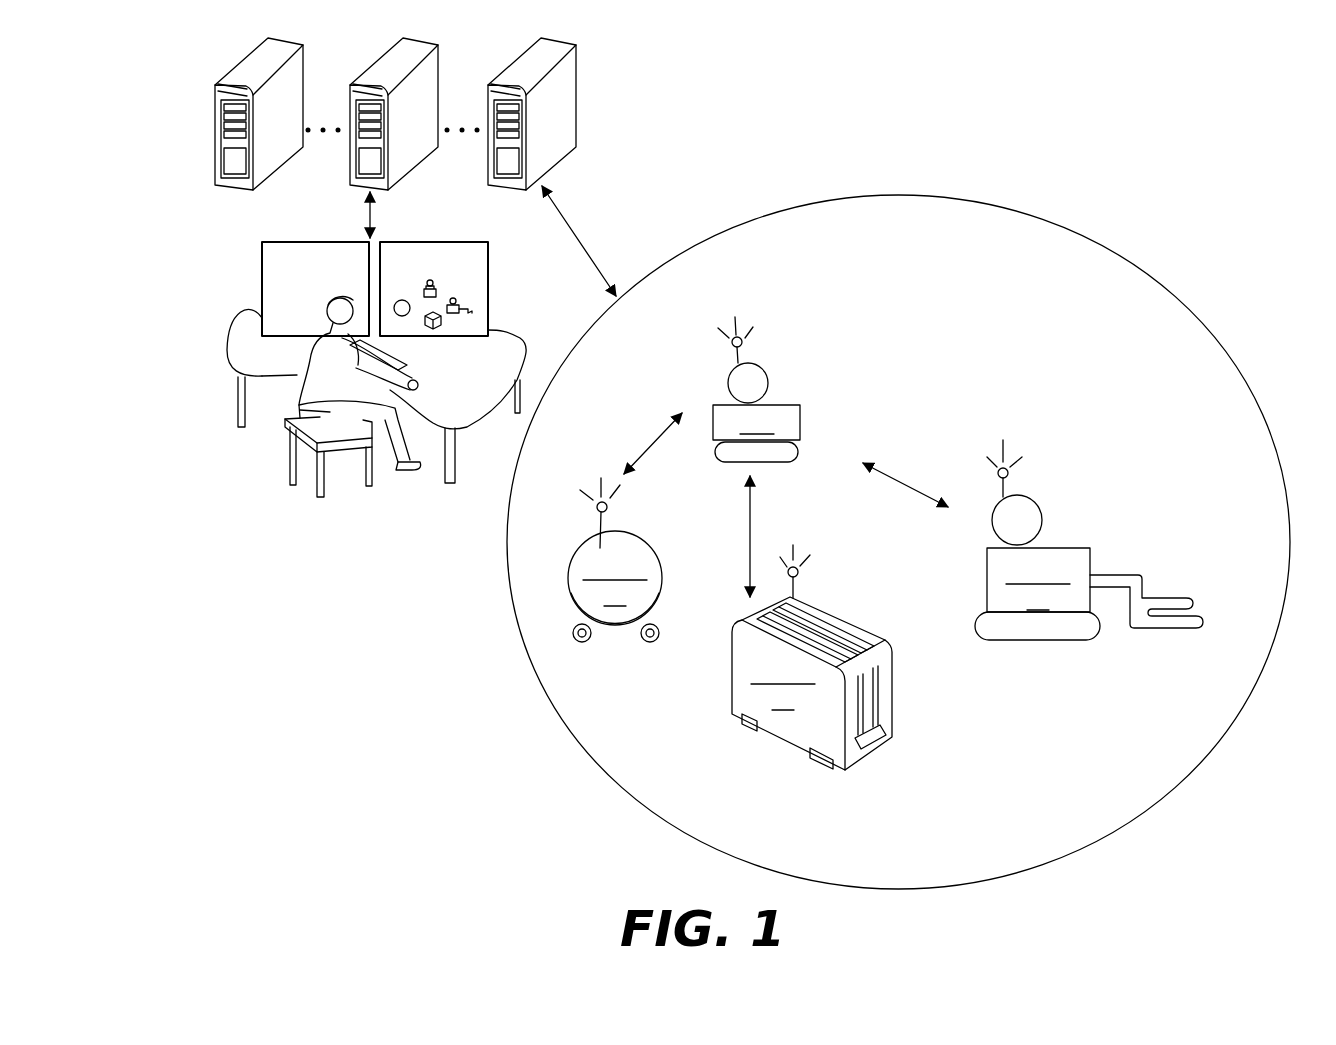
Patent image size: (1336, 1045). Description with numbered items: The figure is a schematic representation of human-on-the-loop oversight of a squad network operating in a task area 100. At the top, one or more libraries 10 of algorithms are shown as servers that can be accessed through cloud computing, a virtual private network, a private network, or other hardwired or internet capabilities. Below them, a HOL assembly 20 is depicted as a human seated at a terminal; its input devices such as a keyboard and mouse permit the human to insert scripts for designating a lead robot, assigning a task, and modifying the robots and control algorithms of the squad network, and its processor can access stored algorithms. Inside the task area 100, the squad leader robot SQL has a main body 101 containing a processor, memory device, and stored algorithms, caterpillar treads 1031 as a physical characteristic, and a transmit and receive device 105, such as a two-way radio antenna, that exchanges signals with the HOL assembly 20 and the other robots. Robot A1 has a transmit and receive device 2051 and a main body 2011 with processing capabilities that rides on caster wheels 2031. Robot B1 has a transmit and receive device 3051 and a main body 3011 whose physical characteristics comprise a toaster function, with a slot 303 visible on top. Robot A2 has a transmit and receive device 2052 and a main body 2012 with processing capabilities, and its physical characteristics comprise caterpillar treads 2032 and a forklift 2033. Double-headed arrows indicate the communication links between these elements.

The library of algorithms 10 is at (260, 62).
The HOL assembly 20 is at (246, 245).
The task area 100 is at (1170, 288).
The main body 101 is at (783, 404).
The transmit and receive device 105 is at (737, 362).
The caterpillar treads 1031 is at (798, 447).
The main body 2011 is at (662, 600).
The transmit and receive device 2051 is at (603, 520).
The caster wheels 2031 is at (653, 640).
The main body 3011 is at (790, 734).
The robot B1 slot 303 is at (840, 636).
The transmit and receive device 3051 is at (796, 583).
The main body 2012 is at (1092, 567).
The transmit and receive device 2052 is at (1008, 478).
The caterpillar treads 2032 is at (1032, 642).
The forklift 2033 is at (1173, 630).